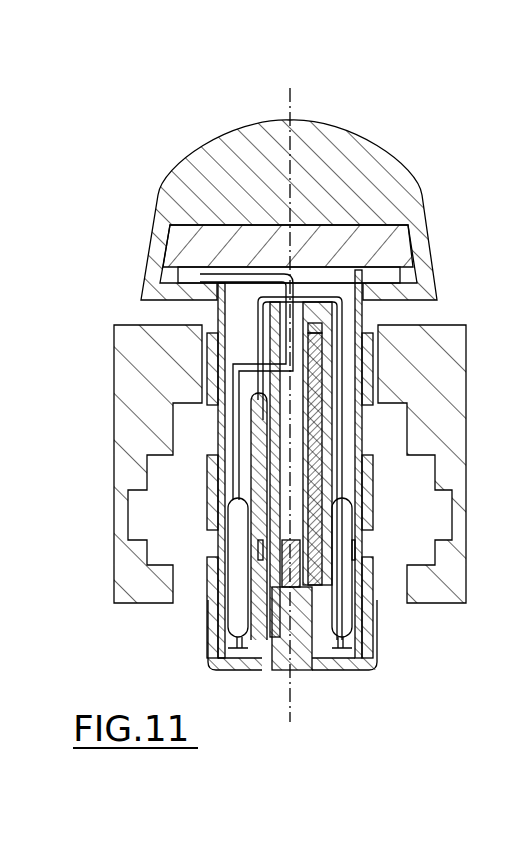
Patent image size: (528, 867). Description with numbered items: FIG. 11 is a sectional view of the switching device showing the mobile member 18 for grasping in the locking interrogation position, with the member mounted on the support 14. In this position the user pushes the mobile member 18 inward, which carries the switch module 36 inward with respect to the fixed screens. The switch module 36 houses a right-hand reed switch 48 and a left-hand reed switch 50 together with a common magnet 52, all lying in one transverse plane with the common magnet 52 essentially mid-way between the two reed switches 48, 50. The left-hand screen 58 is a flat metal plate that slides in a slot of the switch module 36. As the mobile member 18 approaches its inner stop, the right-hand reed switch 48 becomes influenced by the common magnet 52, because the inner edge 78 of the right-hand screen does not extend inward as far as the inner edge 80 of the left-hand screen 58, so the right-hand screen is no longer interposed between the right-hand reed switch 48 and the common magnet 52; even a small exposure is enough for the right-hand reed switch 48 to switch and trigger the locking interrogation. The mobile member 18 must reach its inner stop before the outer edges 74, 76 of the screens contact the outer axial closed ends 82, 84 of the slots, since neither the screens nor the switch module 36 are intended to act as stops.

The mobile member for grasping 18 is at (370, 126).
The support 14 is at (110, 557).
The switch module 36 is at (216, 431).
The outer axial closed end of slot 82 is at (303, 330).
The outer edge of screen 76 is at (303, 330).
The outer edge of screen 74 is at (253, 468).
The outer axial closed end of slot 84 is at (255, 417).
The left-hand screen 58 is at (263, 550).
The inner edge of left-hand screen 80 is at (265, 636).
The common magnet 52 is at (297, 600).
The left-hand reed switch 50 is at (237, 603).
The inner edge of right-hand screen 78 is at (340, 604).
The right-hand reed switch 48 is at (345, 556).